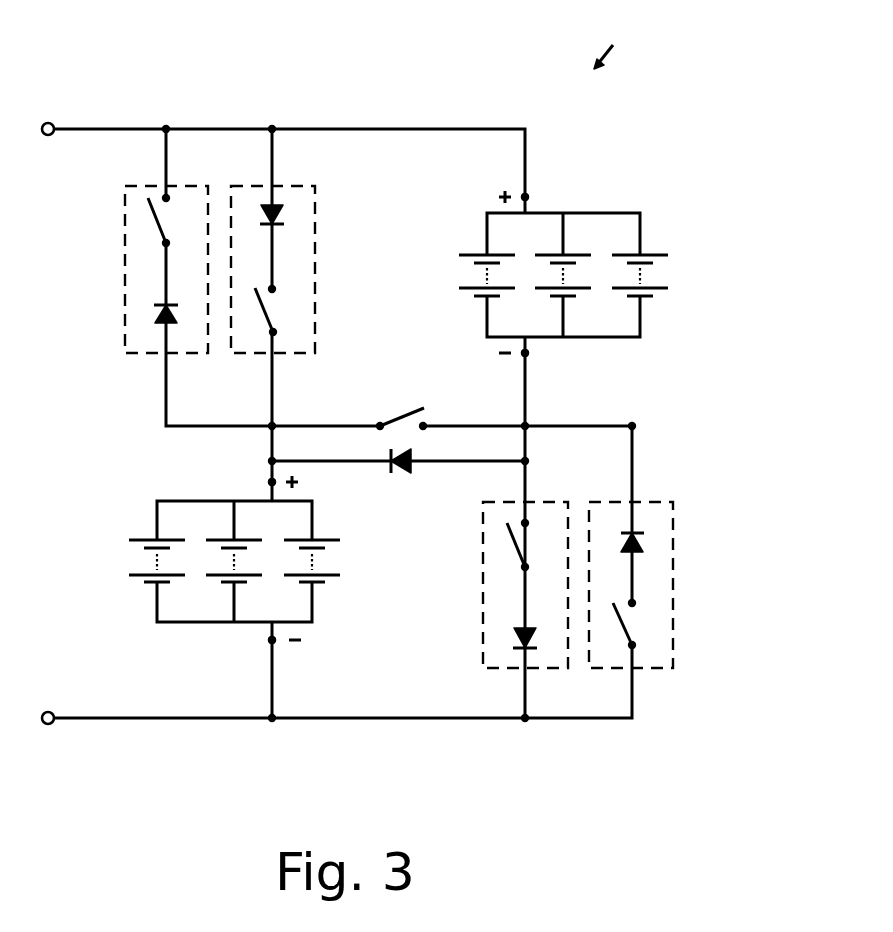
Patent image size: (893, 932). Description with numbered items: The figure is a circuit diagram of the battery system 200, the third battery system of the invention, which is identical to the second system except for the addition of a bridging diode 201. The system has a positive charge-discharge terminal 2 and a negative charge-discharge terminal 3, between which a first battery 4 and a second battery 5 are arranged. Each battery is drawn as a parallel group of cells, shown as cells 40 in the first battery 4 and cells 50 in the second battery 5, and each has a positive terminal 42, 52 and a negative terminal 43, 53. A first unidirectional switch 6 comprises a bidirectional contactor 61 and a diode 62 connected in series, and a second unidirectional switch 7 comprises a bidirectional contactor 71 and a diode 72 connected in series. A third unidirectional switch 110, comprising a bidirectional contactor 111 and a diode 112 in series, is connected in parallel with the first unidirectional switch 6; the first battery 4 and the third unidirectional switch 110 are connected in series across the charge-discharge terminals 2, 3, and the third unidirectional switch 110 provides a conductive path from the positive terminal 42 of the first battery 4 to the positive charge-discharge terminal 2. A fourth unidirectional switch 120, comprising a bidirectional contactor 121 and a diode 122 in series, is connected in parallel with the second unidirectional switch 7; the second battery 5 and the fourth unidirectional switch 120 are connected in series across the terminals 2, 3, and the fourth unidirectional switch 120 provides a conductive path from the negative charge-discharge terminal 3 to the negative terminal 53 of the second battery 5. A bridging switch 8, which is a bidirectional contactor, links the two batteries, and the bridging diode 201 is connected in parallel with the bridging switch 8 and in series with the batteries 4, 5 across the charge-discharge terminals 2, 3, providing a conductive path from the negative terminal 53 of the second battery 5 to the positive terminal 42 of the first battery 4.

The positive charge-discharge terminal 2 is at (47, 122).
The negative charge-discharge terminal 3 is at (47, 710).
The first battery 4 is at (204, 527).
The second battery 5 is at (596, 241).
The first unidirectional switch 6 is at (309, 269).
The second unidirectional switch 7 is at (492, 585).
The bridging switch 8 is at (411, 409).
The battery cells of first battery 40 is at (140, 572).
The positive terminal of first battery 42 is at (269, 481).
The negative terminal of first battery 43 is at (269, 641).
The battery cells of second battery 50 is at (658, 288).
The positive terminal of second battery 52 is at (530, 195).
The negative terminal of second battery 53 is at (530, 357).
The bidirectional contactor 61 is at (283, 316).
The diode 62 is at (288, 214).
The bidirectional contactor 71 is at (512, 538).
The diode 72 is at (514, 636).
The third unidirectional switch 110 is at (124, 269).
The bidirectional contactor 111 is at (148, 214).
The diode 112 is at (150, 316).
The fourth unidirectional switch 120 is at (676, 585).
The bidirectional contactor 121 is at (640, 623).
The diode 122 is at (642, 545).
The battery system 200 is at (624, 43).
The bridging diode 201 is at (402, 473).